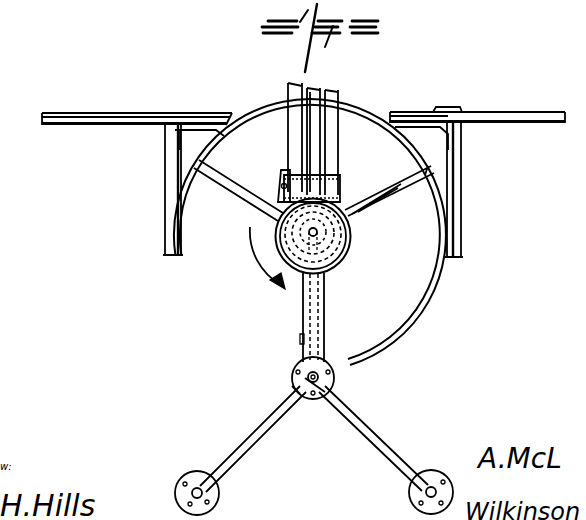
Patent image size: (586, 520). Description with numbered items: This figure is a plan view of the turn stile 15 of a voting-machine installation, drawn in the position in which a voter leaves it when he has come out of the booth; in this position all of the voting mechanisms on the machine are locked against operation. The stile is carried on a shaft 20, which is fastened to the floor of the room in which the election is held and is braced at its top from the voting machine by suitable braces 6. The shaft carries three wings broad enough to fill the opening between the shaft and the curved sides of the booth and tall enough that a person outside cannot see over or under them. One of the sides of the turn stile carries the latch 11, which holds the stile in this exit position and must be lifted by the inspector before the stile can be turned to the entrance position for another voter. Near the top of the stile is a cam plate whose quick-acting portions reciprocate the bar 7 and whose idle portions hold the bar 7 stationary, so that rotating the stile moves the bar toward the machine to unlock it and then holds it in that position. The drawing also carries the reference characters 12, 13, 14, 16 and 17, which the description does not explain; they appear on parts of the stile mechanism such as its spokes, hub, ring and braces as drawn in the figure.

The braces 6 is at (328, 106).
The bar 7 is at (320, 140).
The latch 11 is at (300, 338).
The brace 12 is at (357, 190).
The rod 13 is at (350, 215).
The hub disk 14 is at (327, 232).
The turn stile 15 is at (340, 262).
The ring 16 is at (405, 325).
The brace 17 is at (247, 196).
The shaft 20 is at (297, 240).